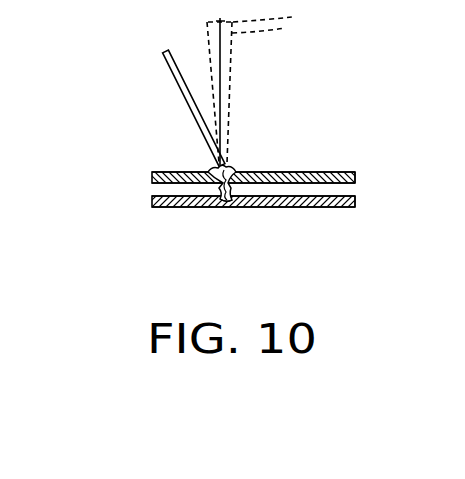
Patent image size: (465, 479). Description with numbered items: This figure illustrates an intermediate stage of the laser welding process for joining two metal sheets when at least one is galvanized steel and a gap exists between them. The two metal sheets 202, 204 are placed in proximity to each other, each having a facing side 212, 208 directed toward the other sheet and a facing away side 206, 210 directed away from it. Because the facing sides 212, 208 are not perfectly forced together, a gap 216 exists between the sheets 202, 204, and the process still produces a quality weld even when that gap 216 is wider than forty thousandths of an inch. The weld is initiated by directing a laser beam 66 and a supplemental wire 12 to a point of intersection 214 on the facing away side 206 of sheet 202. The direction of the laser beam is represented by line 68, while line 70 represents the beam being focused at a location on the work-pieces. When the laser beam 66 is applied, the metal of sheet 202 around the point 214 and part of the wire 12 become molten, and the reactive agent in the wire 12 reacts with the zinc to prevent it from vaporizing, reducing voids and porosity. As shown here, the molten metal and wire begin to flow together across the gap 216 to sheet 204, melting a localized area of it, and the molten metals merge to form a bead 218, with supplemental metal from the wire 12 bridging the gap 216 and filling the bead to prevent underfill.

The supplemental wire 12 is at (190, 118).
The laser beam 66 is at (238, 105).
The laser beam direction line 68 is at (220, 70).
The focused laser beam line 70 is at (278, 22).
The metal sheet 202 is at (152, 178).
The metal sheet 204 is at (345, 208).
The facing away side 206 is at (325, 172).
The facing side 208 is at (353, 188).
The facing away side 210 is at (275, 208).
The facing side 212 is at (355, 183).
The point of intersection 214 is at (226, 166).
The gap 216 is at (157, 190).
The bead 218 is at (224, 197).